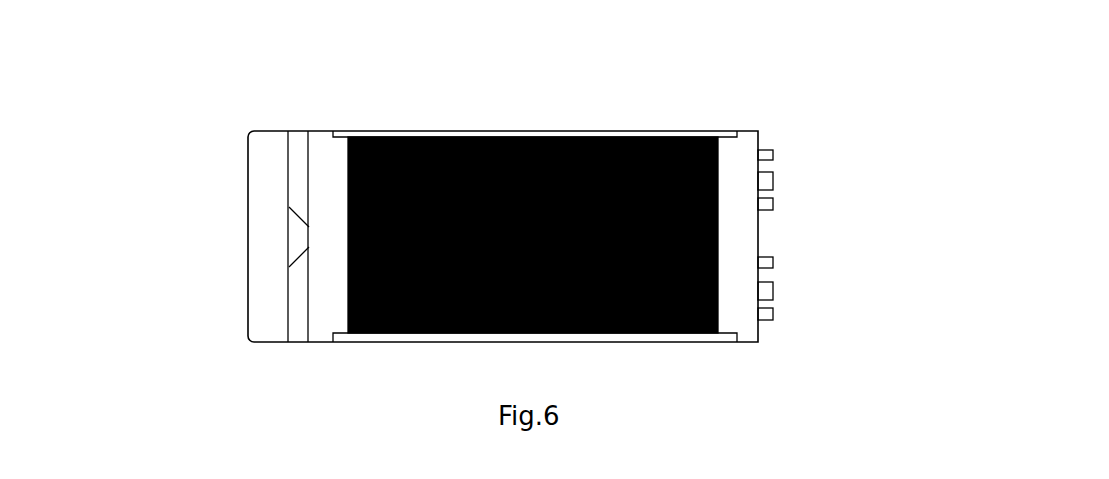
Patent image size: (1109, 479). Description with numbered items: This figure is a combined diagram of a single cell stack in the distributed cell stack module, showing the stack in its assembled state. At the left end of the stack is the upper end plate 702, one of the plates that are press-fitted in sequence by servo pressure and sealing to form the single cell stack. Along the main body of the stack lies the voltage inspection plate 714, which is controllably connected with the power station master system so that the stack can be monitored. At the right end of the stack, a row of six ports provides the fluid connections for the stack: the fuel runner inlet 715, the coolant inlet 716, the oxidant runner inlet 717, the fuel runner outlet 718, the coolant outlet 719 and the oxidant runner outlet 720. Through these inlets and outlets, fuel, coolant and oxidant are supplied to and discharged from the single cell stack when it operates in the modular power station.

The upper end plate 702 is at (262, 262).
The voltage inspection plate 714 is at (530, 131).
The fuel runner inlet 715 is at (958, 127).
The coolant inlet 716 is at (958, 166).
The oxidant runner inlet 717 is at (983, 220).
The fuel runner outlet 718 is at (968, 254).
The coolant outlet 719 is at (773, 284).
The oxidant runner outlet 720 is at (983, 351).